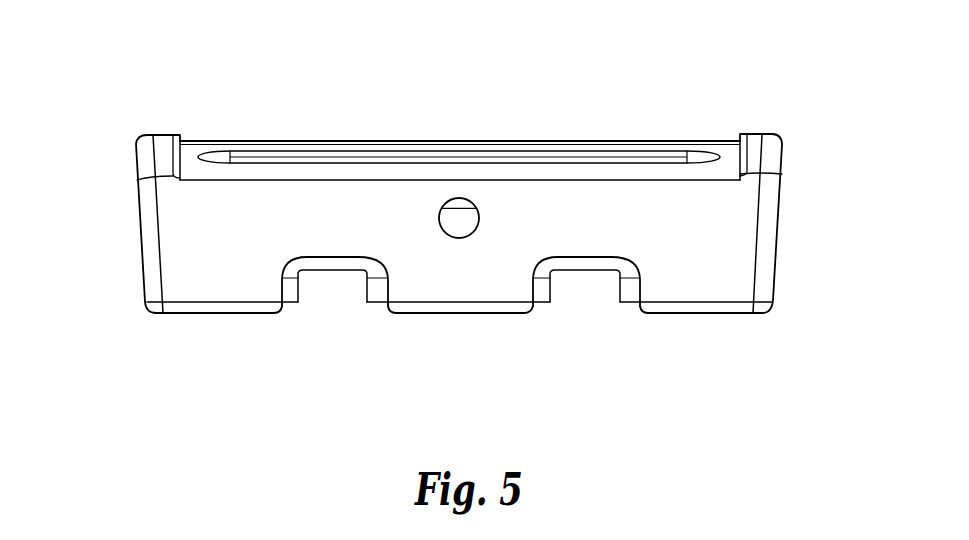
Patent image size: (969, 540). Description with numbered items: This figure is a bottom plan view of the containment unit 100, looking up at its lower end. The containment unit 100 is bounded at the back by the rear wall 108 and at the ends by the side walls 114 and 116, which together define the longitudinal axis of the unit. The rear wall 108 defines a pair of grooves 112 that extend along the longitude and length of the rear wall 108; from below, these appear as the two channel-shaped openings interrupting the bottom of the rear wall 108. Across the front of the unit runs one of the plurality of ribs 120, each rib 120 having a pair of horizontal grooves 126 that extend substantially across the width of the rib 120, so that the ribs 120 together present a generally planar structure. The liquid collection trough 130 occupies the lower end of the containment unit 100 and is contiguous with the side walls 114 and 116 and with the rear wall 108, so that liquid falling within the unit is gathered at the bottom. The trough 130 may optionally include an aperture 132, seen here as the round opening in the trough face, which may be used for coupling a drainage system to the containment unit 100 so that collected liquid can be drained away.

The containment unit 100 is at (719, 77).
The rear wall 108 is at (440, 313).
The grooves 112 is at (332, 292).
The side wall 114 is at (777, 273).
The side wall 116 is at (137, 242).
The ribs 120 is at (357, 173).
The horizontal grooves 126 is at (255, 160).
The liquid collection trough 130 is at (702, 277).
The aperture 132 is at (459, 200).